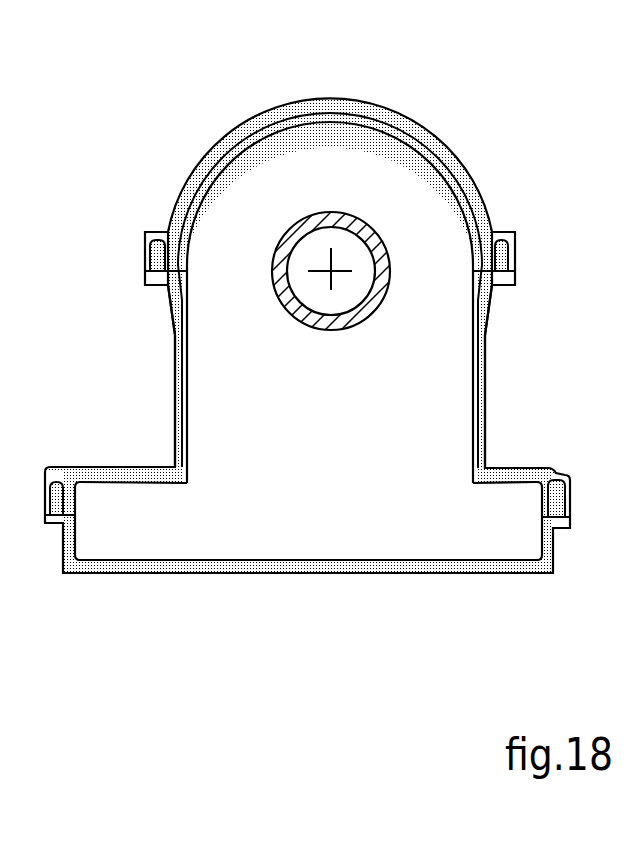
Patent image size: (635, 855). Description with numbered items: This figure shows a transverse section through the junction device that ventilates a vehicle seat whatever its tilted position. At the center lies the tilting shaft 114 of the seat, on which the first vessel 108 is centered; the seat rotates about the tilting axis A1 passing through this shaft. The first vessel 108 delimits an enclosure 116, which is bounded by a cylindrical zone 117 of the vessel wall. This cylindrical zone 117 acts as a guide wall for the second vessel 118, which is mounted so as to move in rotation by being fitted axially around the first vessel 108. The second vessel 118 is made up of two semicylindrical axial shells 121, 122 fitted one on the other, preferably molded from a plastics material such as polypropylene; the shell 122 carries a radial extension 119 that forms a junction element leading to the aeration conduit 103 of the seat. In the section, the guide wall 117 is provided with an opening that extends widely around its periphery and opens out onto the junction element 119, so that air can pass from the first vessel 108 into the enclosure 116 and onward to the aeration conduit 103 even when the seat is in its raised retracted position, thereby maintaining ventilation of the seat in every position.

The second vessel 118 is at (311, 310).
The semicylindrical axial shell 121 is at (474, 183).
The first vessel 108 is at (450, 215).
The radial extension 119 is at (158, 390).
The semicylindrical axial shell 122 is at (485, 366).
The cylindrical zone 117 is at (305, 128).
The enclosure 116 is at (308, 354).
The aeration conduit 103 is at (307, 520).
The tilting shaft 114 is at (273, 262).
The tilting axis A1 is at (340, 257).